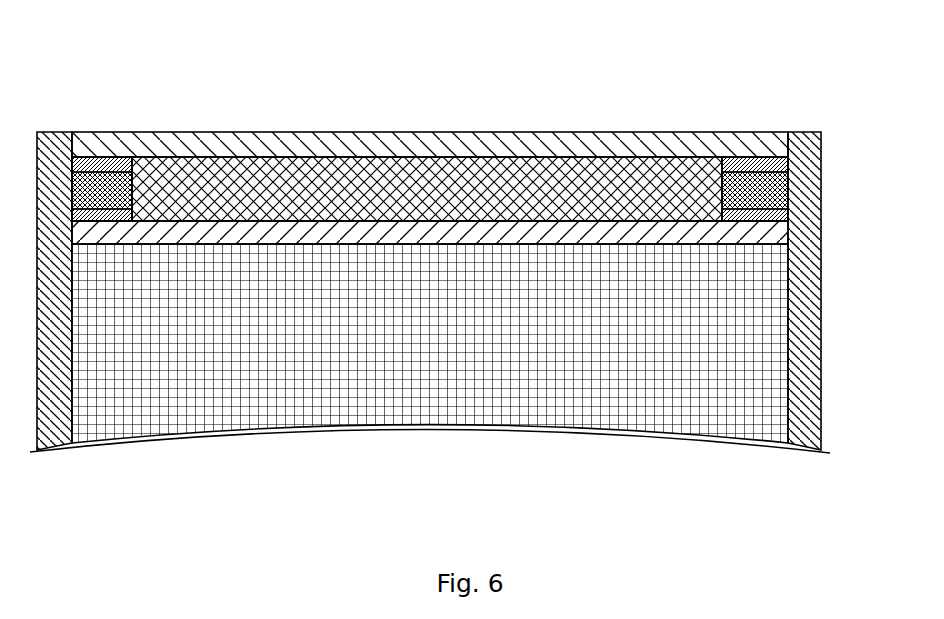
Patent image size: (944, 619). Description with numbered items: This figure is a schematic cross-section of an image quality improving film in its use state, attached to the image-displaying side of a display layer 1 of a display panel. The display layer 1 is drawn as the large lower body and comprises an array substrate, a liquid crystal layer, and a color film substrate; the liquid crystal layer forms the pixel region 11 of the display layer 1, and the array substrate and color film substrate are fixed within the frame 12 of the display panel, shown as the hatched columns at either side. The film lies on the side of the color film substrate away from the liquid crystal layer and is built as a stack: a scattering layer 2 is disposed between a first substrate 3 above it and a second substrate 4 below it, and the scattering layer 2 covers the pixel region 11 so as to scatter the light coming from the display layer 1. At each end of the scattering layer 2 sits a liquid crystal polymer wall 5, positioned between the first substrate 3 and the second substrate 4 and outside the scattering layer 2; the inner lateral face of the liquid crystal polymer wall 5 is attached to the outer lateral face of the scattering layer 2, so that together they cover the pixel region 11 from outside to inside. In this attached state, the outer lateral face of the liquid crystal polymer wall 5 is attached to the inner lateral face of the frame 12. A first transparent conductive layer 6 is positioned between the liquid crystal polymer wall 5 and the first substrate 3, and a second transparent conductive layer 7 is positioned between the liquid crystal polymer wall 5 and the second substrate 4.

The display layer 1 is at (430, 396).
The pixel region 11 is at (417, 533).
The frame 12 is at (373, 533).
The scattering layer 2 is at (520, 157).
The first substrate 3 is at (310, 133).
The second substrate 4 is at (200, 228).
The liquid crystal polymer wall 5 is at (792, 198).
The first transparent conductive layer 6 is at (782, 160).
The second transparent conductive layer 7 is at (800, 242).